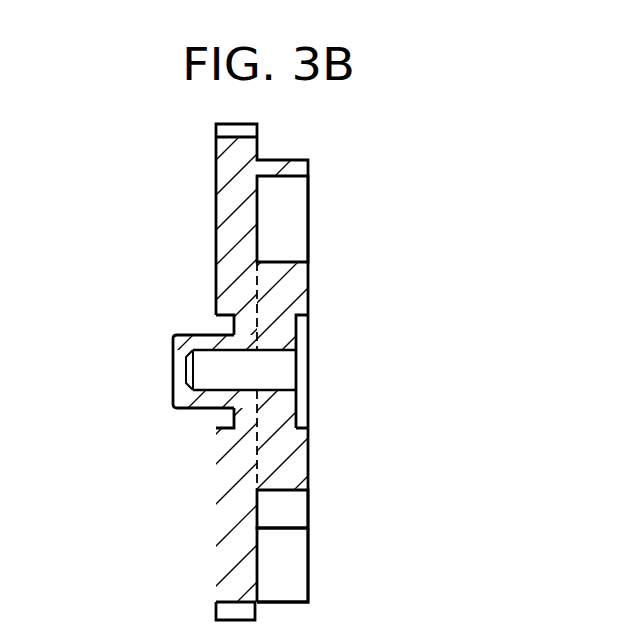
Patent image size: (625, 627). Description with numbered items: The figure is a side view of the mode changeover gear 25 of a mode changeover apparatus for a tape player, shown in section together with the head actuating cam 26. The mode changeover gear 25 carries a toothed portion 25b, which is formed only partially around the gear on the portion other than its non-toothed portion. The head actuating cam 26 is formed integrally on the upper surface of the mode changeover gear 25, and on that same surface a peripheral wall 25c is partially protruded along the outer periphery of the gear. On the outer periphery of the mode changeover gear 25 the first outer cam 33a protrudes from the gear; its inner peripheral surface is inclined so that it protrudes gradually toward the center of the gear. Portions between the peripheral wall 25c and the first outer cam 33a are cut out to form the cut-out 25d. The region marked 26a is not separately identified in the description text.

The mode changeover gear 25 is at (337, 148).
The toothed portion 25b is at (227, 133).
The peripheral wall 25c is at (293, 222).
The cut-out 25d is at (272, 517).
The head actuating cam 26 is at (316, 328).
The recess of washer plate 26a is at (288, 496).
The first outer cam 33a is at (288, 578).